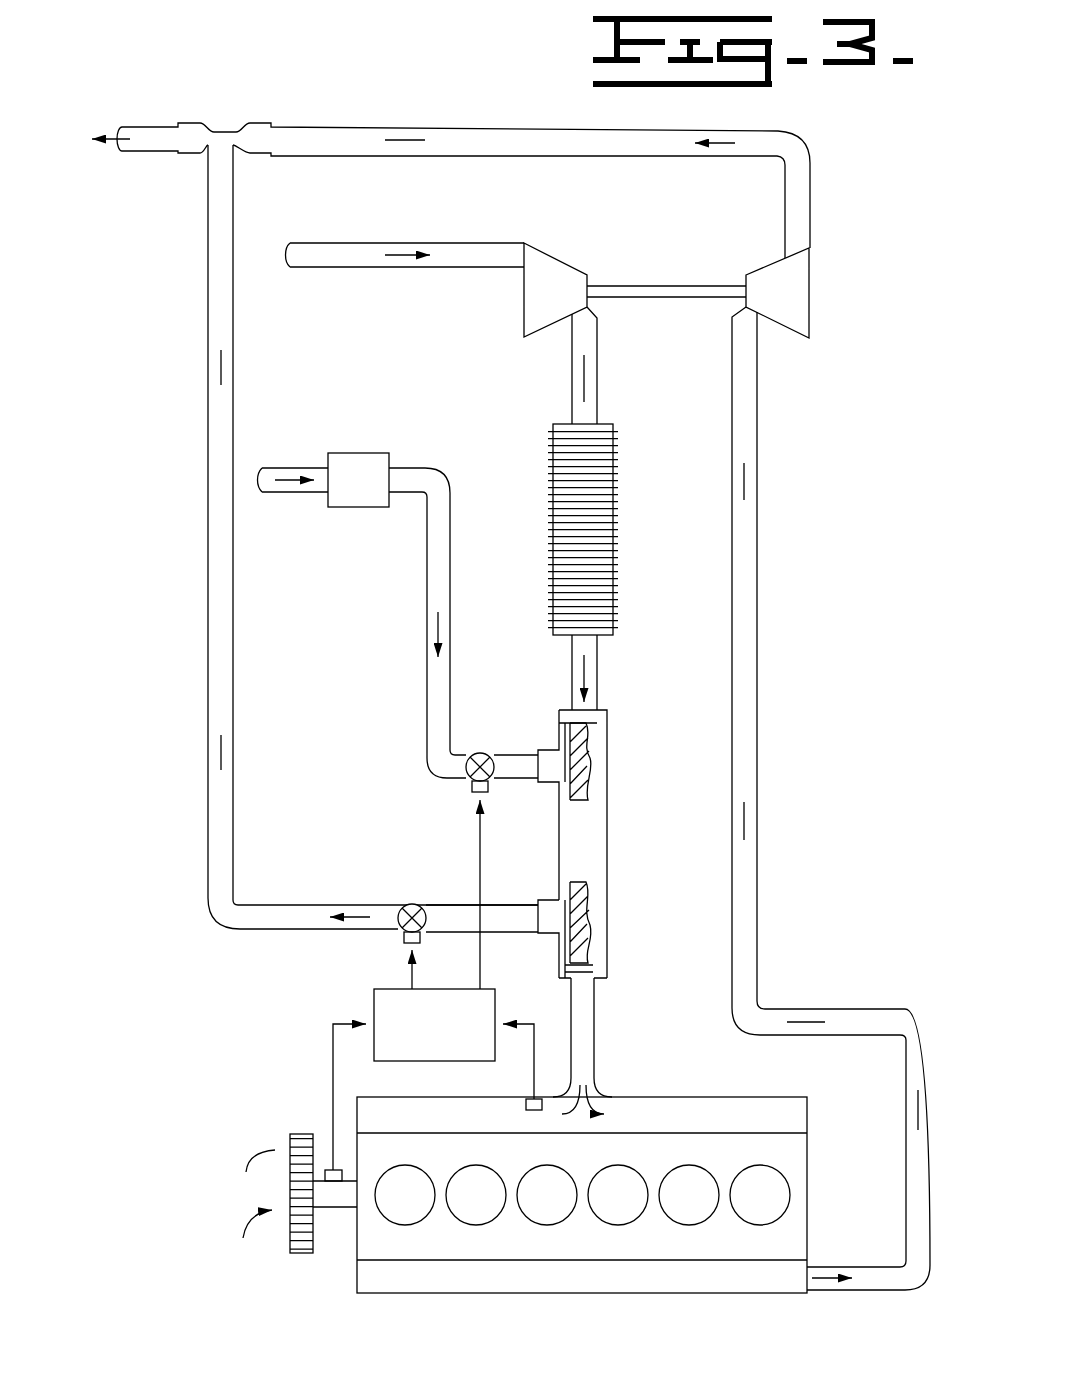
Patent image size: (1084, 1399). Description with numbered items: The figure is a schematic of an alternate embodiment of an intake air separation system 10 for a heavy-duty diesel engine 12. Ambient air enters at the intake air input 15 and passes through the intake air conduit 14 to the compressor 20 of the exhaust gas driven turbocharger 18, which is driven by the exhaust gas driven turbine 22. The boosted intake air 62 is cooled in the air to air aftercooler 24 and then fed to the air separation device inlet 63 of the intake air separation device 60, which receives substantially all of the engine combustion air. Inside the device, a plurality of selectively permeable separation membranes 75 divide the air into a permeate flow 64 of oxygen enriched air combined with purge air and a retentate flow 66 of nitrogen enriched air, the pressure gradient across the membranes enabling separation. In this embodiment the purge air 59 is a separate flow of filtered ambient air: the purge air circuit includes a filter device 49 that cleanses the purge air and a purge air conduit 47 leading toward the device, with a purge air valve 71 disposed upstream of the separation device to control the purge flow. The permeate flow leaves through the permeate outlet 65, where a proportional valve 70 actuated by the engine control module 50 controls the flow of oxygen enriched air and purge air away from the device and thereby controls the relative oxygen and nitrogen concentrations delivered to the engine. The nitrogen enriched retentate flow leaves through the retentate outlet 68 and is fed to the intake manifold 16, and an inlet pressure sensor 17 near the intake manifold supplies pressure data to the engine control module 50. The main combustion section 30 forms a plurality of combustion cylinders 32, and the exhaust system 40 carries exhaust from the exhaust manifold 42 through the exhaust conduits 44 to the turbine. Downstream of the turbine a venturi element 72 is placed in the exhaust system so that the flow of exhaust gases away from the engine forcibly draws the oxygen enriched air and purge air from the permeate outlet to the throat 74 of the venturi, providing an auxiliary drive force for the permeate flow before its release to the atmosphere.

The intake air separation system 10 is at (872, 194).
The diesel engine 12 is at (838, 1105).
The intake air conduit 14 is at (572, 363).
The intake air input 15 is at (478, 243).
The intake manifold 16 is at (763, 1100).
The inlet pressure sensor 17 is at (526, 1105).
The intake air pressurizing device 18 is at (668, 240).
The compressor 20 is at (545, 265).
The exhaust gas driven turbine 22 is at (775, 272).
The air to air aftercooler 24 is at (553, 495).
The main combustion section 30 is at (817, 1215).
The combustion cylinders 32 is at (393, 1209).
The exhaust system 40 is at (880, 930).
The exhaust manifold 42 is at (723, 1291).
The exhaust conduits 44 is at (758, 420).
The purge air conduit 47 is at (428, 592).
The filter device 49 is at (347, 493).
The engine control module 50 is at (423, 1038).
The purge air 59 is at (450, 708).
The intake air separation device 60 is at (591, 915).
The intake air 62 is at (573, 349).
The air separation device inlet 63 is at (598, 720).
The permeate flow 64 is at (209, 701).
The permeate outlet 65 is at (556, 905).
The retentate flow 66 is at (572, 1033).
The retentate outlet 68 is at (594, 985).
The proportional valve 70 is at (403, 928).
The purge air valve 71 is at (482, 752).
The venturi element 72 is at (258, 126).
The throat 74 is at (228, 128).
The separation membranes 75 is at (580, 765).